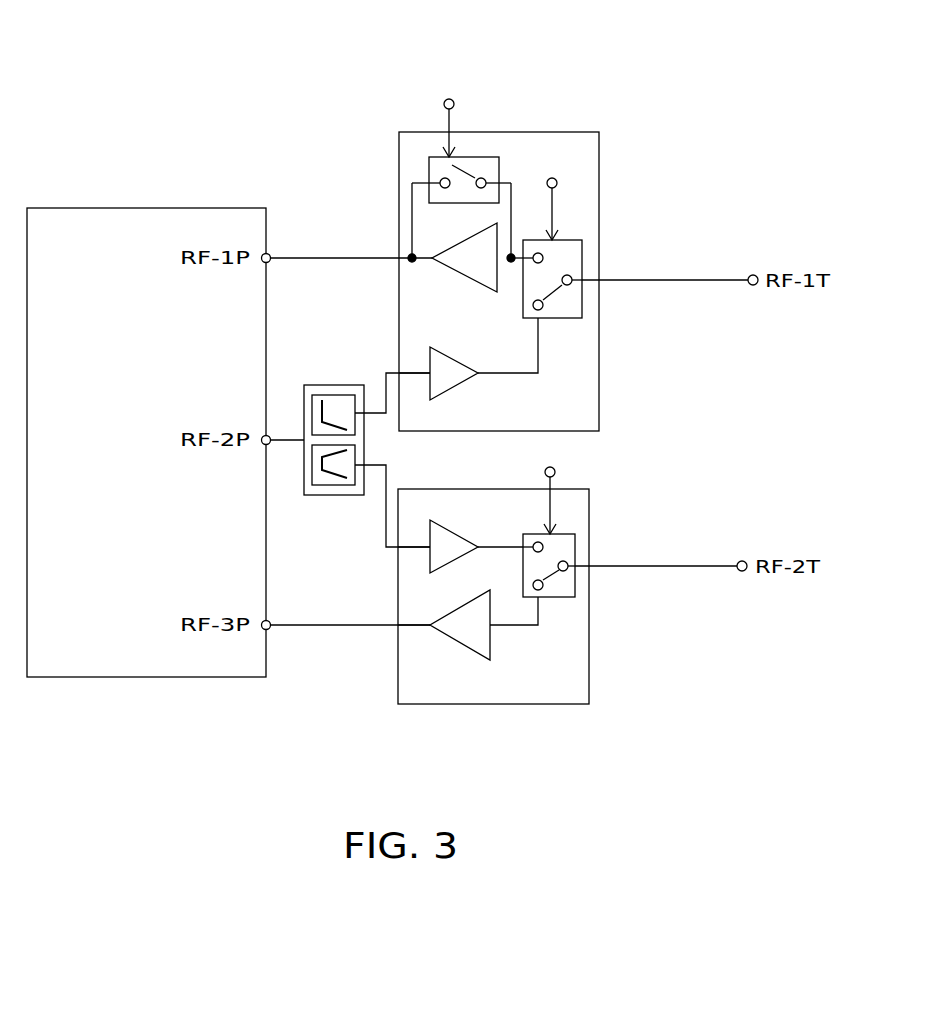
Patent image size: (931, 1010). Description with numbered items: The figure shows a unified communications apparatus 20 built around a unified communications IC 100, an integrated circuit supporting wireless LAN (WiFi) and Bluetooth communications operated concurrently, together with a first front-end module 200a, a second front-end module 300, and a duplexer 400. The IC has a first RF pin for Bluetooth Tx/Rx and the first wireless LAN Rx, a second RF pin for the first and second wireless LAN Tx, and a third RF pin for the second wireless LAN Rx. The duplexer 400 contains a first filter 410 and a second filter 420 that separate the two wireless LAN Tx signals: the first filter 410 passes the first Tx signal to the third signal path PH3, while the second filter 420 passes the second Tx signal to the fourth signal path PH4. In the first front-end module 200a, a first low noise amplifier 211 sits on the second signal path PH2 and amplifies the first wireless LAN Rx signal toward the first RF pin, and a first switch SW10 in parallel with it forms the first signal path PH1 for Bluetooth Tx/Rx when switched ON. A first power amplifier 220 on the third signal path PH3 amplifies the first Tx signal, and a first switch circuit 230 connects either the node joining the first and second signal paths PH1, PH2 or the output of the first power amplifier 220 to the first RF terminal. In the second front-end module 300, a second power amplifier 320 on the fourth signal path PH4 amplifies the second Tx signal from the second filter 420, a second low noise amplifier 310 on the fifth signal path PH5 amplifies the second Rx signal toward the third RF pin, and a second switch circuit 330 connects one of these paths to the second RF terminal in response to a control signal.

The unified communications apparatus 20 is at (369, 40).
The unified communications IC 100 is at (148, 208).
The first front-end module 200a is at (570, 132).
The second front-end module 300 is at (485, 704).
The duplexer 400 is at (337, 439).
The first filter 410 is at (343, 395).
The second filter 420 is at (340, 487).
The first low noise amplifier 211 is at (478, 290).
The first power amplifier 220 is at (450, 352).
The first switch circuit 230 is at (563, 320).
The second low noise amplifier 310 is at (457, 615).
The second power amplifier 320 is at (455, 533).
The second switch circuit 330 is at (558, 600).
The first switch SW10 is at (428, 168).
The first signal path PH1 is at (503, 180).
The second signal path PH2 is at (422, 250).
The third signal path PH3 is at (428, 378).
The fourth signal path PH4 is at (413, 545).
The fifth signal path PH5 is at (415, 630).